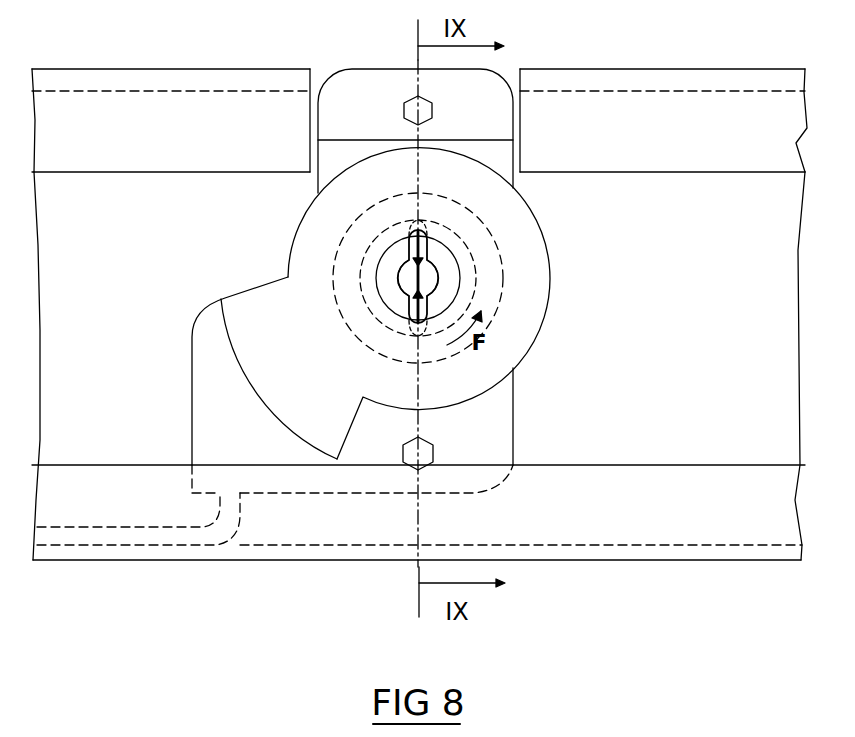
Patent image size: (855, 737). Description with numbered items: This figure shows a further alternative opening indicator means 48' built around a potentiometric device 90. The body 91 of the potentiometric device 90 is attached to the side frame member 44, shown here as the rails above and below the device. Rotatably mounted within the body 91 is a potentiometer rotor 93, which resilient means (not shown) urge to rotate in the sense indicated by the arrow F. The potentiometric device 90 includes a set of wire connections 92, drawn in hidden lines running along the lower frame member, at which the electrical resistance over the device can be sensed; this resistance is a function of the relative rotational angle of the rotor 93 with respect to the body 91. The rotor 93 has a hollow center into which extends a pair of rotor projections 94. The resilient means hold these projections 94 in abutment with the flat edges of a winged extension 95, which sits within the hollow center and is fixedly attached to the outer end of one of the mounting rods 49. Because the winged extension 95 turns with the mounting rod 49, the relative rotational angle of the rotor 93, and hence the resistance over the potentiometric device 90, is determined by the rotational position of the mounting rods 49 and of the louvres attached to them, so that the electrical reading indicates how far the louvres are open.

The side frame member 44 is at (178, 82).
The opening indicator means 48' is at (452, 248).
The mounting rod 49 is at (423, 277).
The potentiometric device 90 is at (279, 248).
The body 91 is at (207, 382).
The wire connections 92 is at (133, 535).
The potentiometer rotor 93 is at (358, 318).
The rotor projections 94 is at (437, 230).
The winged extension 95 is at (437, 268).